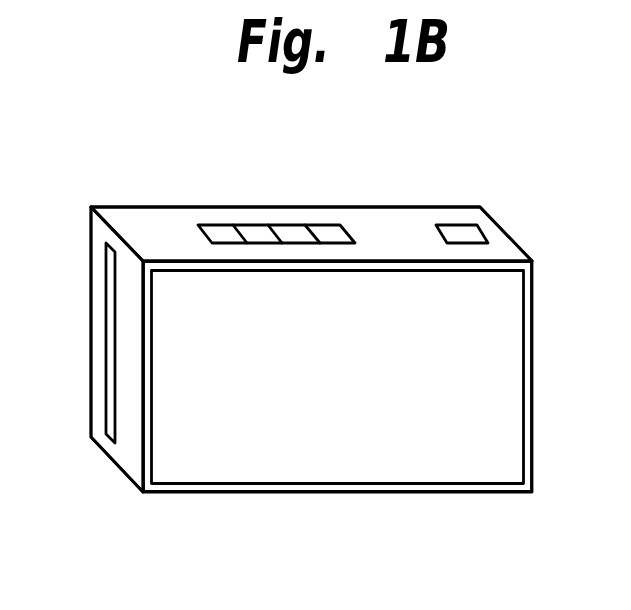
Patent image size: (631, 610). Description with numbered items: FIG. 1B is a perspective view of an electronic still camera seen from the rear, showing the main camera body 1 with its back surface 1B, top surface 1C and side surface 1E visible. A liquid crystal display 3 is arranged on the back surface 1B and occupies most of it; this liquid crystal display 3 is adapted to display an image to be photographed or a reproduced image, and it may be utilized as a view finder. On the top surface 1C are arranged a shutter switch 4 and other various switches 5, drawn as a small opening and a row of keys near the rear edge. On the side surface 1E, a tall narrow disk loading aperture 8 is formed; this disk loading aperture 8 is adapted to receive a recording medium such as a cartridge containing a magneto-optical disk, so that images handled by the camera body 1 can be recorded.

The main camera body 1 is at (318, 177).
The back surface 1B is at (454, 466).
The top surface 1C is at (391, 235).
The side surface 1E is at (128, 457).
The liquid crystal display 3 is at (242, 465).
The shutter switch 4 is at (460, 235).
The various switches 5 is at (258, 235).
The disk loading aperture 8 is at (111, 370).